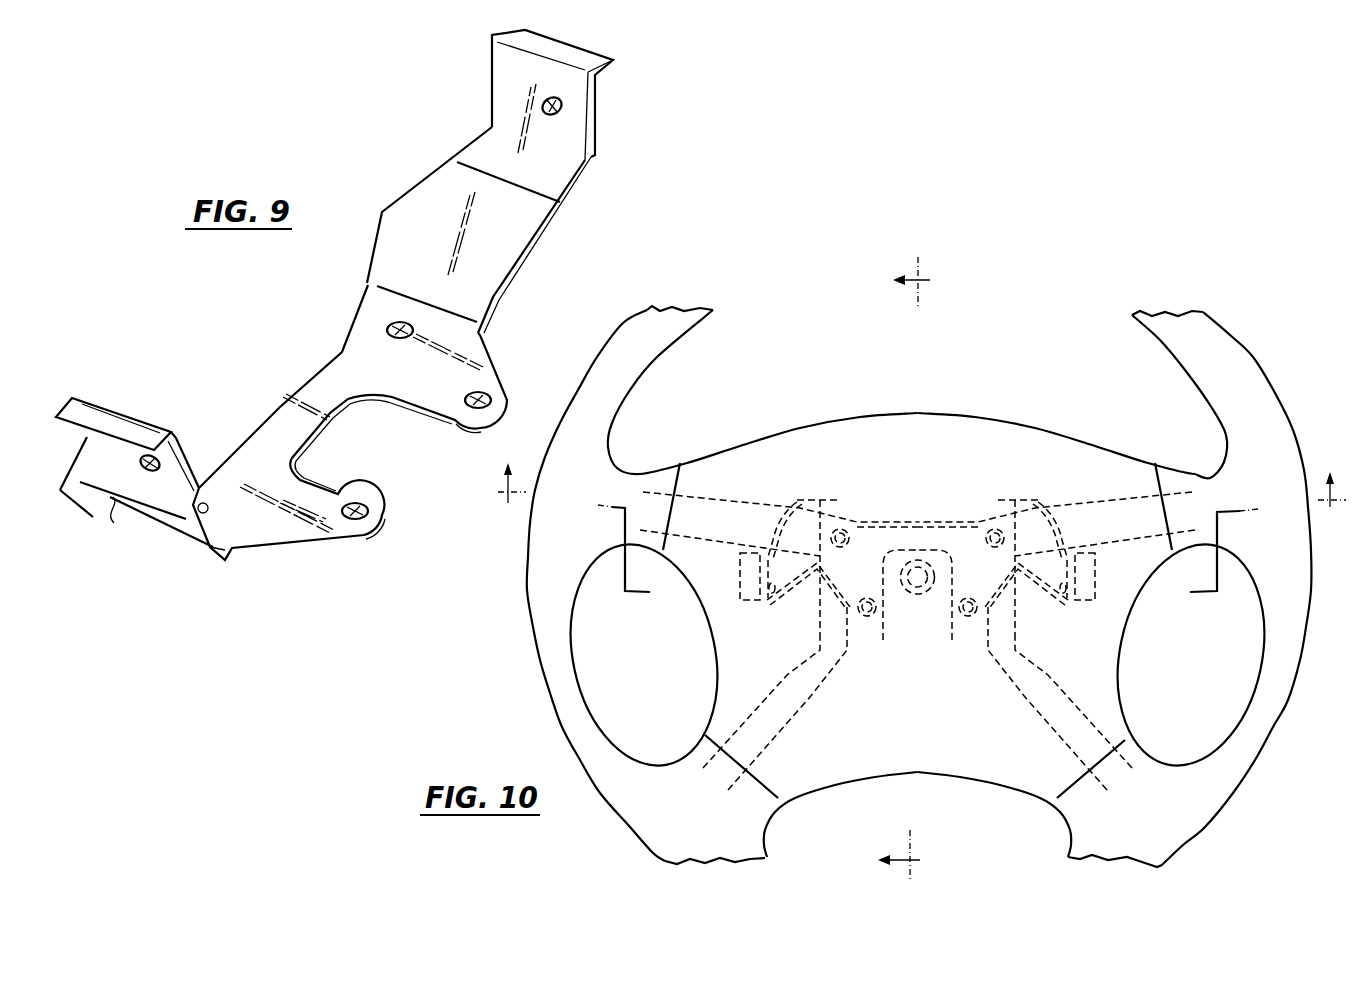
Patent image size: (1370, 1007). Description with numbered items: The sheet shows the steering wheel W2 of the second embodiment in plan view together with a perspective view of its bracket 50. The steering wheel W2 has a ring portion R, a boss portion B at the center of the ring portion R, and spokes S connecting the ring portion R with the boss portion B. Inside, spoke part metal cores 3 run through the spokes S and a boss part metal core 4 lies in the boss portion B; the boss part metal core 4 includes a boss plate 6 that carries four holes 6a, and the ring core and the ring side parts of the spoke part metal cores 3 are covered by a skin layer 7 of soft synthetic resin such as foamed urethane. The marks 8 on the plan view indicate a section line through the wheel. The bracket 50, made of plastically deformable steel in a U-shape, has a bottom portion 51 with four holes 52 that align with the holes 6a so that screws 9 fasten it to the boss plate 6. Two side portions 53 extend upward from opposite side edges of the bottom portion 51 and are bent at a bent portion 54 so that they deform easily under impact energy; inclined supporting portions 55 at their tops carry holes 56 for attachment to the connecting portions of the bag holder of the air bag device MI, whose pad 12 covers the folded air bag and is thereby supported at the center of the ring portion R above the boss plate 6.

In FIG. 9, the bottom portion 51 is at (323, 385).
In FIG. 10, the bottom portion 51 is at (938, 526).
In FIG. 9, the holes 52 is at (392, 327).
In FIG. 9, the side portions 53 is at (512, 237).
In FIG. 10, the side portions 53 is at (802, 503).
In FIG. 9, the bent portion 54 is at (557, 204).
In FIG. 9, the supporting portions 55 is at (572, 129).
In FIG. 10, the supporting portions 55 is at (764, 600).
In FIG. 9, the holes 56 is at (561, 104).
In FIG. 10, the spoke part metal cores 3 is at (700, 503).
In FIG. 10, the boss part metal core 4 is at (873, 660).
In FIG. 10, the boss plate 6 is at (937, 650).
In FIG. 10, the holes 6a is at (842, 532).
In FIG. 10, the skin layer 7 is at (904, 573).
In FIG. 10, the section line 8- 8 is at (917, 527).
In FIG. 10, the screws 9 is at (840, 529).
In FIG. 10, the pad 12 is at (863, 423).
In FIG. 10, the bracket 50 is at (915, 518).
In FIG. 10, the ring portion R is at (1212, 334).
In FIG. 10, the spokes S is at (664, 740).
In FIG. 10, the boss portion B is at (934, 788).
In FIG. 10, the air bag device MI is at (944, 400).
In FIG. 10, the steering wheel W2 is at (919, 555).